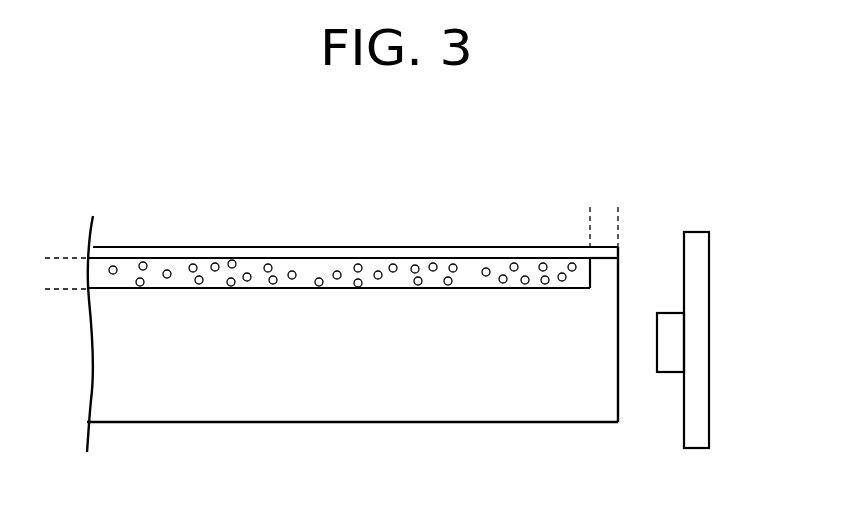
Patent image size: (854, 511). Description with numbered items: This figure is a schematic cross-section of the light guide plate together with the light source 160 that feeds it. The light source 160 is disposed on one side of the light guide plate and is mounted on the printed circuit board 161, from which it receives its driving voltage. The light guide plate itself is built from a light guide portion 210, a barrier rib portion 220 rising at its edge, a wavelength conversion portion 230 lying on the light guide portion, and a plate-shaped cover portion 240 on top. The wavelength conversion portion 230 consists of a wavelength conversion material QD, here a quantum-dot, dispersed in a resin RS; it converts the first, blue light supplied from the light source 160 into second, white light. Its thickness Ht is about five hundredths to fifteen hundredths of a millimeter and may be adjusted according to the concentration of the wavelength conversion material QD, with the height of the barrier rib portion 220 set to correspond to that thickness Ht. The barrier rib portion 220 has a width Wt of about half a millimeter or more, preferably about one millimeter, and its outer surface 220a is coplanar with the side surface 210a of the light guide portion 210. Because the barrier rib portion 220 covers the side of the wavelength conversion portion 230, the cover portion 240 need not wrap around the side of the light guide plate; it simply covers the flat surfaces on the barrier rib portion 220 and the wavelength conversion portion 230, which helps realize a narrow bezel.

The light guide portion 210 is at (502, 403).
The side surface of the light guide portion 210a is at (620, 405).
The barrier rib portion 220 is at (604, 272).
The outer surface of the barrier rib portion 220a is at (618, 277).
The wavelength conversion portion 230 is at (339, 215).
The cover portion 240 is at (204, 255).
The resin RS is at (308, 272).
The wavelength conversion material QD is at (295, 183).
The light source 160 is at (670, 350).
The printed circuit board 161 is at (698, 408).
The thickness of the wavelength conversion portion Ht is at (53, 235).
The width of the barrier rib portion Wt is at (640, 203).